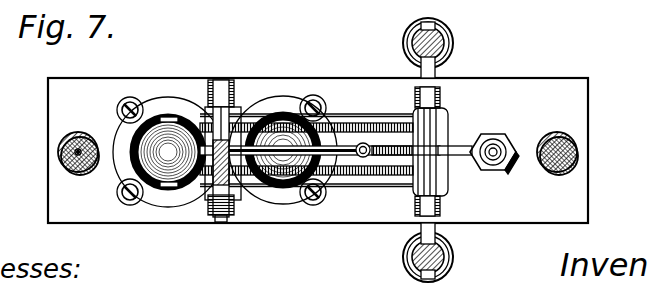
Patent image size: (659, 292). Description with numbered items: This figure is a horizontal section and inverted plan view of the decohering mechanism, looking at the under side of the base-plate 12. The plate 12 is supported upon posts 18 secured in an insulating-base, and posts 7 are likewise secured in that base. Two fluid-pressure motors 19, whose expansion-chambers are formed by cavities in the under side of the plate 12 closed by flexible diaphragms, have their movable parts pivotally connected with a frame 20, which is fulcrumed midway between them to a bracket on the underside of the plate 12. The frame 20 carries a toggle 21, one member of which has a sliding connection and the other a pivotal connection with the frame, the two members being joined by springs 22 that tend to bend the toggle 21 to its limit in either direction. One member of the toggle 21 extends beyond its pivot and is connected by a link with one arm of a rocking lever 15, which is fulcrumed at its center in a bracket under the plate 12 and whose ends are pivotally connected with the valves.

The post 7 is at (453, 44).
The base-plate 12 is at (48, 108).
The rocking lever 15 is at (485, 133).
The post 18 is at (58, 152).
The fluid-pressure motor 19 is at (289, 78).
The frame 20 is at (393, 106).
The toggle 21 is at (394, 174).
The spring 22 is at (338, 122).